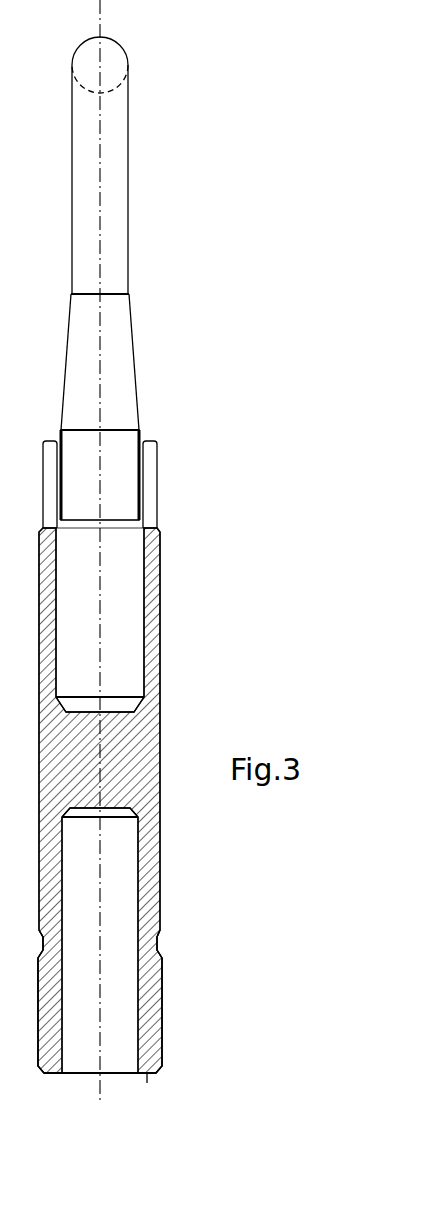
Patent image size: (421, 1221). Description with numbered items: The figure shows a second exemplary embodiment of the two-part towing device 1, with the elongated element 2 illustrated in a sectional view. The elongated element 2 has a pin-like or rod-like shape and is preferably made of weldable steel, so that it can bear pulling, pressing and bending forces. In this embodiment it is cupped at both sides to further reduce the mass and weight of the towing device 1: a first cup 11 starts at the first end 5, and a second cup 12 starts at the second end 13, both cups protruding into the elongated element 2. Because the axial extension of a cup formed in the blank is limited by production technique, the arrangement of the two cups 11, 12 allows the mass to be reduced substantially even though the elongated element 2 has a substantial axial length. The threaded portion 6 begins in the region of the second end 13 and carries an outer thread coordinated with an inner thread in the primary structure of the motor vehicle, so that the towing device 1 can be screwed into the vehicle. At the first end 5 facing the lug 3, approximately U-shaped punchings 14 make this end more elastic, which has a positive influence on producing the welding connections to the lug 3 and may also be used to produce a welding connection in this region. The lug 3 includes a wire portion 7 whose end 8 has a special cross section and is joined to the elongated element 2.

The towing device 1 is at (186, 513).
The elongated element 2 is at (160, 742).
The lug 3 is at (130, 228).
The first end 5 is at (140, 430).
The threaded portion 6 is at (158, 990).
The wire portion 7 is at (120, 189).
The end of the wire portion 8 is at (118, 441).
The first cup 11 is at (118, 600).
The second cup 12 is at (118, 913).
The second end 13 is at (147, 1083).
The punchings 14 is at (50, 481).